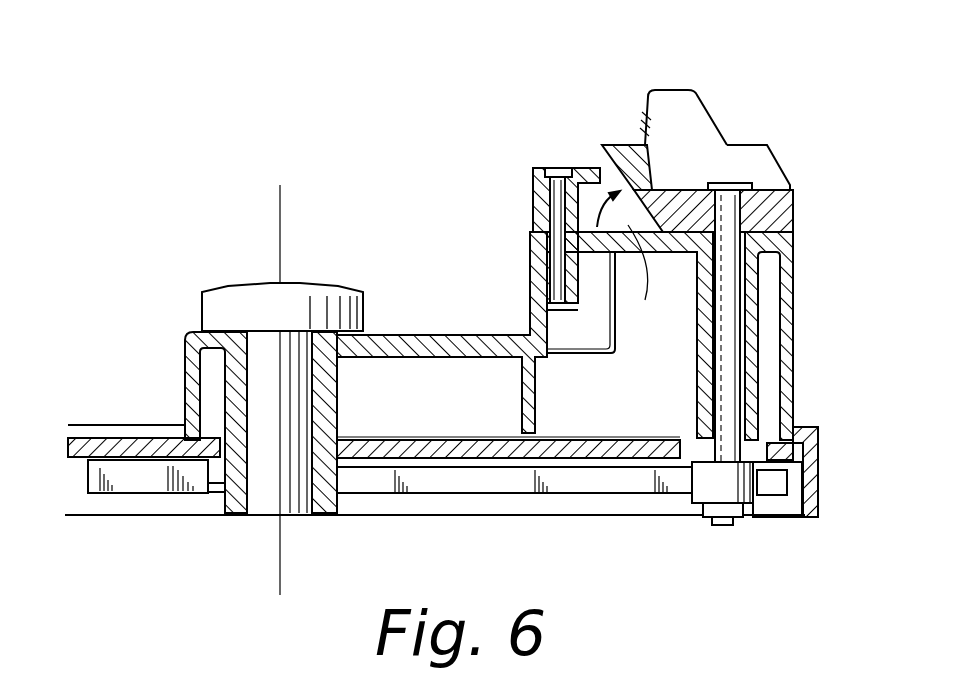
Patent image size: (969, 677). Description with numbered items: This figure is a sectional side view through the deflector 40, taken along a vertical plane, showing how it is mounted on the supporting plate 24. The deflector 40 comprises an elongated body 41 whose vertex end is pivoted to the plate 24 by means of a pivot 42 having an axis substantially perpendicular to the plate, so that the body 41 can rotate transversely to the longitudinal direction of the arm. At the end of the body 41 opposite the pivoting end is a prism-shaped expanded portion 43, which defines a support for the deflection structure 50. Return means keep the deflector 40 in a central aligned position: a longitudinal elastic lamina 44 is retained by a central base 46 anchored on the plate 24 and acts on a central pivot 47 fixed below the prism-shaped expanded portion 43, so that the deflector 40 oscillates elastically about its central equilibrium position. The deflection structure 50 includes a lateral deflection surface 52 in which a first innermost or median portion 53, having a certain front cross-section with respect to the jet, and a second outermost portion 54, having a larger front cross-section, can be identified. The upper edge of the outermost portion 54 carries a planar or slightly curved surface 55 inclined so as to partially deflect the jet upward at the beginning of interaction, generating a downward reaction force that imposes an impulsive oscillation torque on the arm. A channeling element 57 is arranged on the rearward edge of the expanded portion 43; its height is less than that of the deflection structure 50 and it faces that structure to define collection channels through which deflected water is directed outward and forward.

The plate 24 is at (97, 437).
The deflector 40 is at (365, 140).
The elongated body 41 is at (448, 343).
The pivot 42 is at (207, 293).
The prism-shaped expanded portion 43 is at (795, 328).
The longitudinal elastic lamina 44 is at (772, 497).
The central base 46 is at (165, 495).
The central pivot 47 is at (693, 500).
The deflection structure 50 is at (795, 125).
The lateral deflection surface 52 is at (792, 176).
The median portion 53 is at (655, 162).
The outermost portion 54 is at (693, 120).
The upper edge surface 55 is at (673, 90).
The channeling element 57 is at (532, 173).